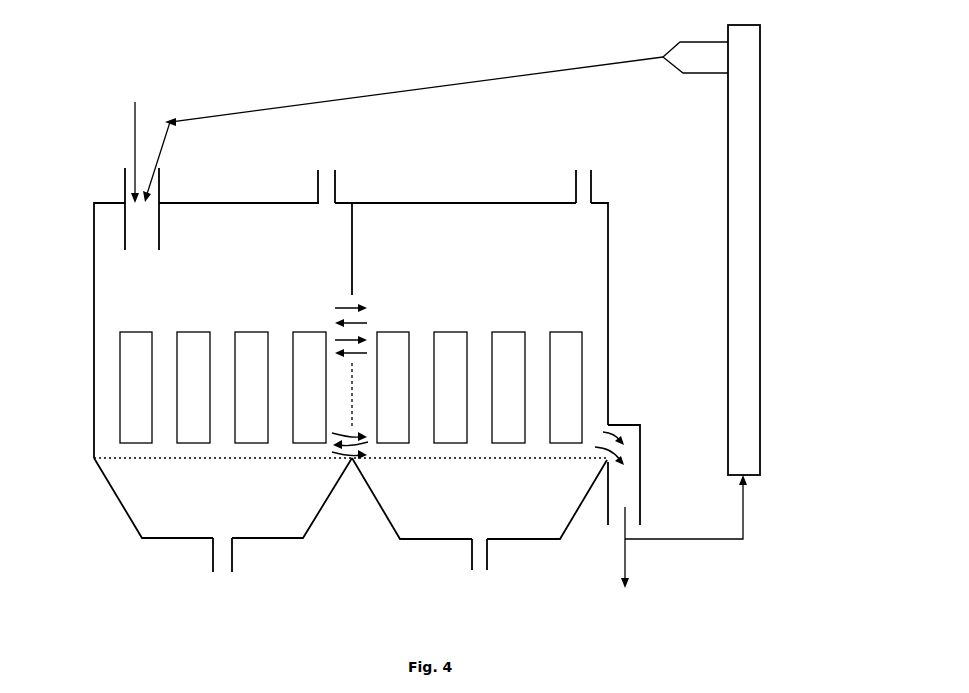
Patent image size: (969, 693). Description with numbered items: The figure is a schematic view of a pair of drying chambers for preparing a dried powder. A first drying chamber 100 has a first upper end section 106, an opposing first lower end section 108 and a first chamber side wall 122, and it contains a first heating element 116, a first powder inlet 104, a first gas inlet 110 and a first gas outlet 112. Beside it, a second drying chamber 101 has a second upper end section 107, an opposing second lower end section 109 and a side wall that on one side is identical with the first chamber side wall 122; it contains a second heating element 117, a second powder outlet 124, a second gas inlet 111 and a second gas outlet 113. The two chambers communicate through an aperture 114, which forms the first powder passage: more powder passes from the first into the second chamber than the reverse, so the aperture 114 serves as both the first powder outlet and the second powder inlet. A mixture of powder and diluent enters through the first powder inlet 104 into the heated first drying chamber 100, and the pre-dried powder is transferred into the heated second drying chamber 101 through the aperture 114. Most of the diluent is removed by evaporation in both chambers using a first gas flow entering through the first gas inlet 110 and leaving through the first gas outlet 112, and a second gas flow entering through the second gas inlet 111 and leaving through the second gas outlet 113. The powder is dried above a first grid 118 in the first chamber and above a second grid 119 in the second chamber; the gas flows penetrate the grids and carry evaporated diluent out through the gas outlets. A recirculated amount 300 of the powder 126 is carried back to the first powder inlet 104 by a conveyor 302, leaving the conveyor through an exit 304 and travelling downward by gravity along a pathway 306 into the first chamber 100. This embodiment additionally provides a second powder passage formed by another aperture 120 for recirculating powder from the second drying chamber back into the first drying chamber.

The first drying chamber 100 is at (150, 278).
The second drying chamber 101 is at (458, 227).
The first powder inlet 104 is at (135, 145).
The first upper end section 106 is at (100, 203).
The second upper end section 107 is at (507, 203).
The first lower end section 108 is at (135, 537).
The second lower end section 109 is at (415, 540).
The first gas inlet 110 is at (220, 553).
The second gas inlet 111 is at (480, 558).
The first gas outlet 112 is at (327, 185).
The second gas outlet 113 is at (582, 183).
The aperture 114 is at (350, 440).
The first heating element 116 is at (132, 373).
The second heating element 117 is at (565, 355).
The first grid 118 is at (142, 460).
The second grid 119 is at (517, 460).
The another aperture 120 is at (352, 330).
The first chamber side wall 122 is at (350, 265).
The second powder outlet 124 is at (617, 428).
The powder 126 is at (625, 558).
The recirculated amount 300 is at (680, 540).
The conveyor 302 is at (743, 205).
The exit 304 is at (695, 58).
The pathway 306 is at (282, 95).